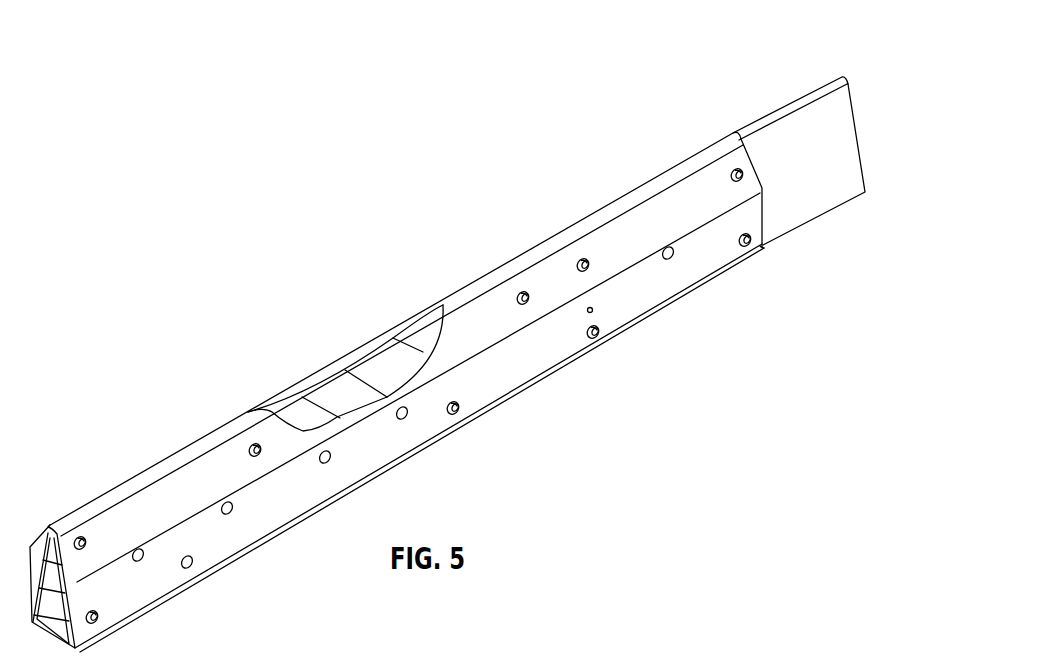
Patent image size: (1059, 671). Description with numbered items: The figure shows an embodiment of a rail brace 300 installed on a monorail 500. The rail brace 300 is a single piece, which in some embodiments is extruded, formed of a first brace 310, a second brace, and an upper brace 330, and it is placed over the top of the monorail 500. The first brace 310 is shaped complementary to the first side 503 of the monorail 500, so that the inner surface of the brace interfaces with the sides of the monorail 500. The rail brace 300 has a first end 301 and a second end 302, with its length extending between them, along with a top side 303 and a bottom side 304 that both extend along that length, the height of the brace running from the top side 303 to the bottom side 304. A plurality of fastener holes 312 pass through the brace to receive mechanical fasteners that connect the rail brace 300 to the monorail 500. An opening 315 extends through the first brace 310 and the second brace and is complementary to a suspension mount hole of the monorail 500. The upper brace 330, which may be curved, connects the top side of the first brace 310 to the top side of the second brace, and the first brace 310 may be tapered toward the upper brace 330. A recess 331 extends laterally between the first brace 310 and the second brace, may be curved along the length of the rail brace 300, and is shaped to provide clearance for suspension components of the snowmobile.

The rail brace 300 is at (149, 183).
The first end 301 is at (764, 248).
The second end 302 is at (72, 587).
The top side 303 is at (208, 445).
The bottom side 304 is at (230, 557).
The first brace 310 is at (612, 307).
The fastener holes 312 is at (458, 413).
The opening 315 is at (587, 307).
The upper brace 330 is at (503, 659).
The recess 331 is at (338, 392).
The monorail 500 is at (820, 100).
The first side 503 is at (848, 188).